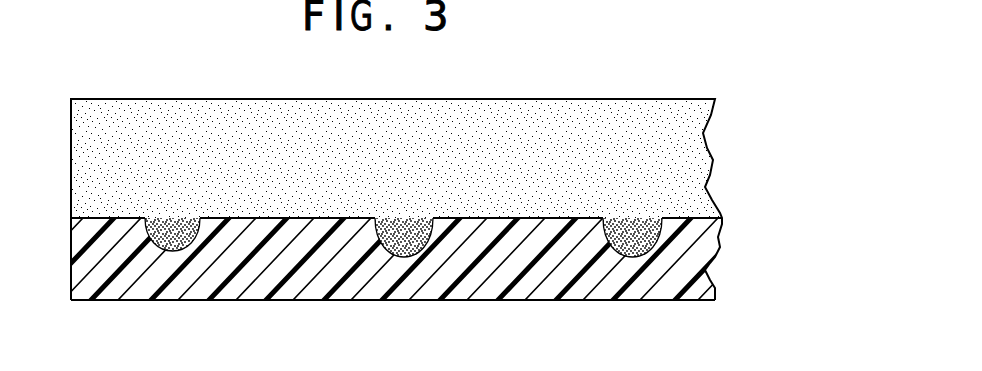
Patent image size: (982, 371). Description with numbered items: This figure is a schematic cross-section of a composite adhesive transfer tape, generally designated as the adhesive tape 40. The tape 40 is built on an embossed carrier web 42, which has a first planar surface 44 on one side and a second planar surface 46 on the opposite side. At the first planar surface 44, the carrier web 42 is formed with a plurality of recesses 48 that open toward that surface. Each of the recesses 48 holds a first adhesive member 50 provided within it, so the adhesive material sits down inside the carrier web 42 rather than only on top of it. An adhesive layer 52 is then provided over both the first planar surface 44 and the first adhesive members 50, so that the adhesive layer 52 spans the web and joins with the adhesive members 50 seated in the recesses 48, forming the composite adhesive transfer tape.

The adhesive tape 40 is at (726, 57).
The embossed carrier web 42 is at (137, 290).
The first planar surface 44 is at (686, 218).
The second planar surface 46 is at (673, 302).
The recesses 48 is at (402, 247).
The first adhesive members 50 is at (172, 230).
The adhesive layer 52 is at (508, 118).